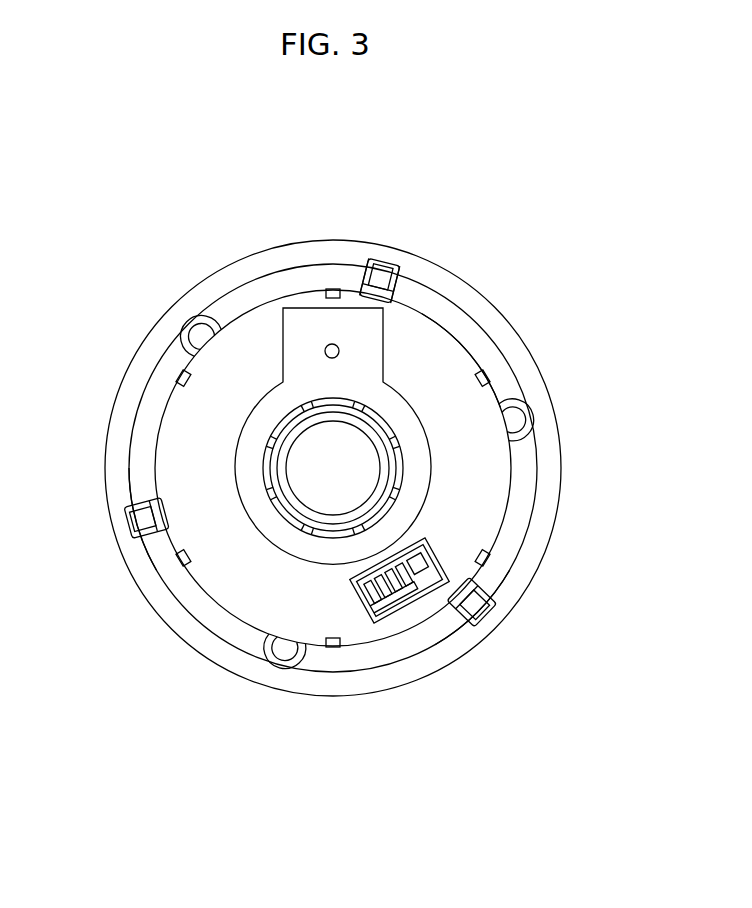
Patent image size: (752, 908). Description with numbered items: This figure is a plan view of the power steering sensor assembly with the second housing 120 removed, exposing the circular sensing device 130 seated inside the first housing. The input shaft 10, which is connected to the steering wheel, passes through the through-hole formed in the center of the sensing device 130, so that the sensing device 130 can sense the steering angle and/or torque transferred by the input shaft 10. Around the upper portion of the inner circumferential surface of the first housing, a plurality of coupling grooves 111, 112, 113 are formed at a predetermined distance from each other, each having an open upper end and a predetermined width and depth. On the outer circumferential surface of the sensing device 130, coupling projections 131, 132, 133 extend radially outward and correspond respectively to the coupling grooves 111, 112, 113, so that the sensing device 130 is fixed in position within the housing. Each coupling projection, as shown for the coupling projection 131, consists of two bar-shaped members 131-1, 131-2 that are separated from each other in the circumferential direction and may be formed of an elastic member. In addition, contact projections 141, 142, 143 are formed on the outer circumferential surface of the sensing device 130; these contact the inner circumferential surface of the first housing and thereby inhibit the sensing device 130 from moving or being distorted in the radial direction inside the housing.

The input shaft 10 is at (318, 490).
The coupling groove 111 is at (441, 360).
The coupling groove 112 is at (121, 527).
The coupling groove 113 is at (495, 627).
The second housing 120 is at (246, 232).
The sensing device 130 is at (478, 322).
The coupling projection 131 is at (364, 234).
The bar-shaped member 131-1 is at (366, 272).
The bar-shaped member 131-2 is at (396, 268).
The coupling projection 132 is at (168, 494).
The coupling projection 133 is at (461, 586).
The contact projection 141 is at (198, 320).
The contact projection 142 is at (288, 656).
The contact projection 143 is at (530, 400).